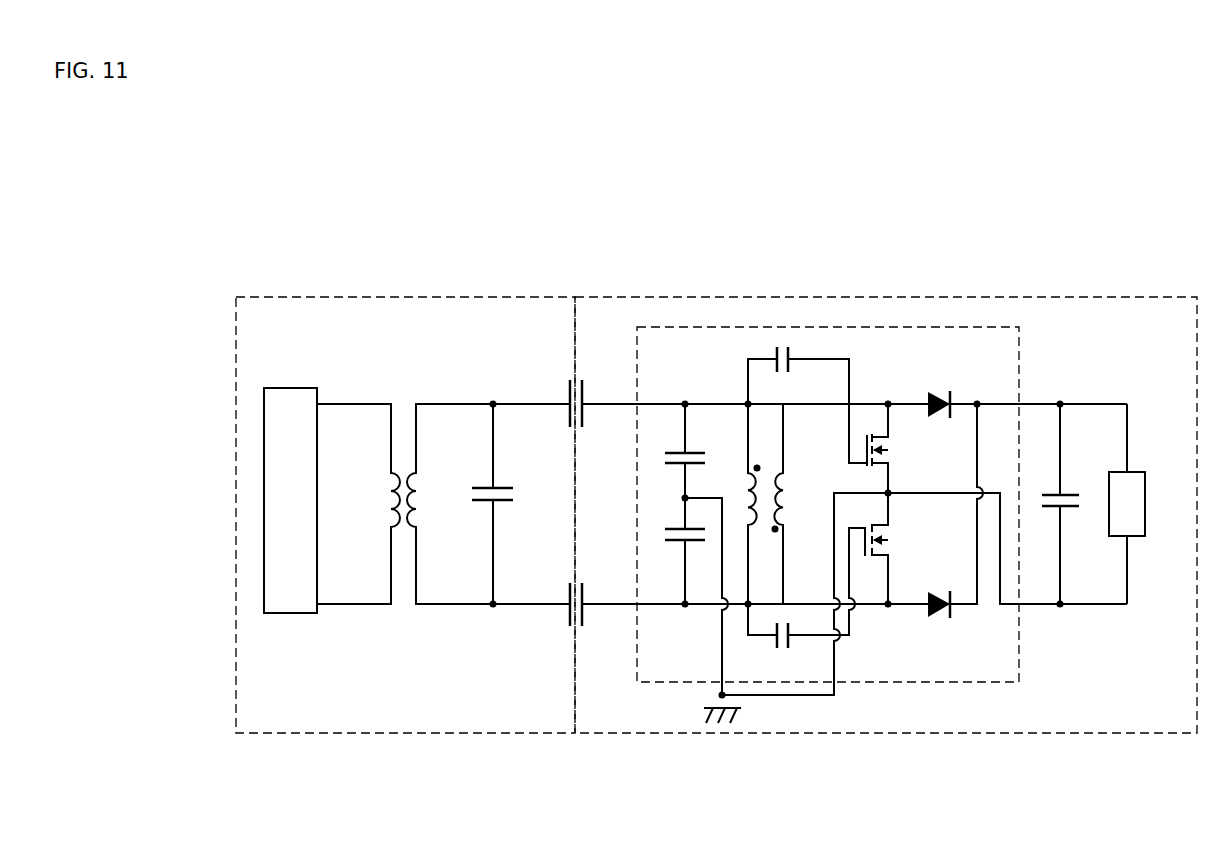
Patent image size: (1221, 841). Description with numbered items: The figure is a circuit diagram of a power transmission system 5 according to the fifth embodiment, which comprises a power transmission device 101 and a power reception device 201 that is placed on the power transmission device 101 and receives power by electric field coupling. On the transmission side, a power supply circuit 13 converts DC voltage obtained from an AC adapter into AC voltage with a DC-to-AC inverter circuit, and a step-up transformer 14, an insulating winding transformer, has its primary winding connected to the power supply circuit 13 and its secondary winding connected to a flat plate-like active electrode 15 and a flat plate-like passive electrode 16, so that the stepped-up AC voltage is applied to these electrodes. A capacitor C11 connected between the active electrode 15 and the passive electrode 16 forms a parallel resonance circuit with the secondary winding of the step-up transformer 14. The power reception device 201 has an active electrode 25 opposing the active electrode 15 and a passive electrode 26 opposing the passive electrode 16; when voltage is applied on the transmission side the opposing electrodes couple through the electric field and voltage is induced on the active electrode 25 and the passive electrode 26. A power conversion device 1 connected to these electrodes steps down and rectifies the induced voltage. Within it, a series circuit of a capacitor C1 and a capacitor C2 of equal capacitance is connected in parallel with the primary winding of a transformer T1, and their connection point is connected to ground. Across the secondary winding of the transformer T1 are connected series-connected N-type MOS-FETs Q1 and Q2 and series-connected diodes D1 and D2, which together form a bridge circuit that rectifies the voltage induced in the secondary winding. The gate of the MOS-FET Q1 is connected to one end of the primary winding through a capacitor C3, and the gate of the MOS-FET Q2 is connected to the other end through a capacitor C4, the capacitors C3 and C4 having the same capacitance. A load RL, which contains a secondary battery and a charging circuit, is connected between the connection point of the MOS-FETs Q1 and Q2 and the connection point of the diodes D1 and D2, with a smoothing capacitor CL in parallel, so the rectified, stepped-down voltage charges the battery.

The power transmission system 5 is at (266, 237).
The power transmission device 101 is at (275, 296).
The power reception device 201 is at (1112, 296).
The power conversion device 1 is at (997, 322).
The power supply circuit 13 is at (300, 388).
The step-up transformer 14 is at (404, 392).
The active electrode 15 is at (570, 394).
The passive electrode 16 is at (570, 622).
The active electrode 25 is at (583, 394).
The passive electrode 26 is at (584, 622).
The capacitor C11 is at (505, 504).
The capacitor C1 is at (681, 451).
The capacitor C2 is at (681, 553).
The capacitor C3 is at (807, 405).
The capacitor C4 is at (806, 598).
The transformer T1 is at (764, 504).
The MOS-FET Q1 is at (872, 449).
The MOS-FET Q2 is at (894, 550).
The diode D1 is at (1007, 419).
The diode D2 is at (919, 592).
The smoothing capacitor CL is at (1054, 504).
The load RL is at (1131, 470).